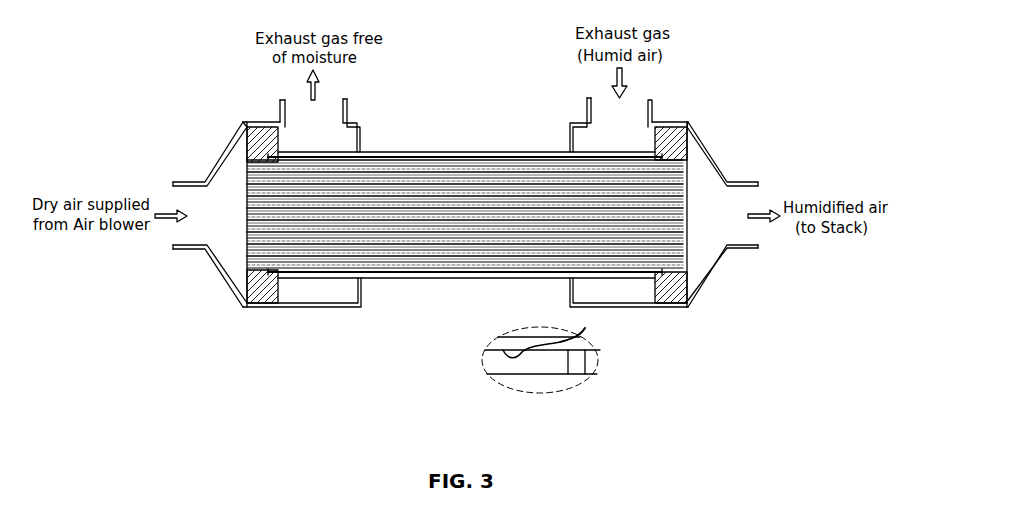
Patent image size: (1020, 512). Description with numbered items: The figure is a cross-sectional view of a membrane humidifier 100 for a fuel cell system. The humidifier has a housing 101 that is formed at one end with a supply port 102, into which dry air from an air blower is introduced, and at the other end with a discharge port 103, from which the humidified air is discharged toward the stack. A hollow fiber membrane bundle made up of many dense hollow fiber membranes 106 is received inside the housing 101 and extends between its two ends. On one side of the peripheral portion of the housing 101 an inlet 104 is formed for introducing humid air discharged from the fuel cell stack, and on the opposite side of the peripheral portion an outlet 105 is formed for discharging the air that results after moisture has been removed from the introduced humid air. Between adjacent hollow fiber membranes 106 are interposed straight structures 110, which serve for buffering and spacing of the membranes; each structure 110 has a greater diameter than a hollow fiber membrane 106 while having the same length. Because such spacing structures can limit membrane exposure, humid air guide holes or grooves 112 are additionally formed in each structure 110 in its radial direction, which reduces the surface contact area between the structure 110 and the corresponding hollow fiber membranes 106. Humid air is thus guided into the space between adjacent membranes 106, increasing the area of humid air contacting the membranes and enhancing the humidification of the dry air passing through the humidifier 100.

The membrane humidifier 100 is at (453, 142).
The housing 101 is at (673, 125).
The supply port 102 is at (192, 193).
The discharge port 103 is at (737, 192).
The inlet 104 is at (605, 107).
The outlet 105 is at (295, 107).
The hollow fiber membrane 106 is at (390, 265).
The straight structure 110 is at (455, 272).
The humid air guide hole or groove 112 is at (575, 355).